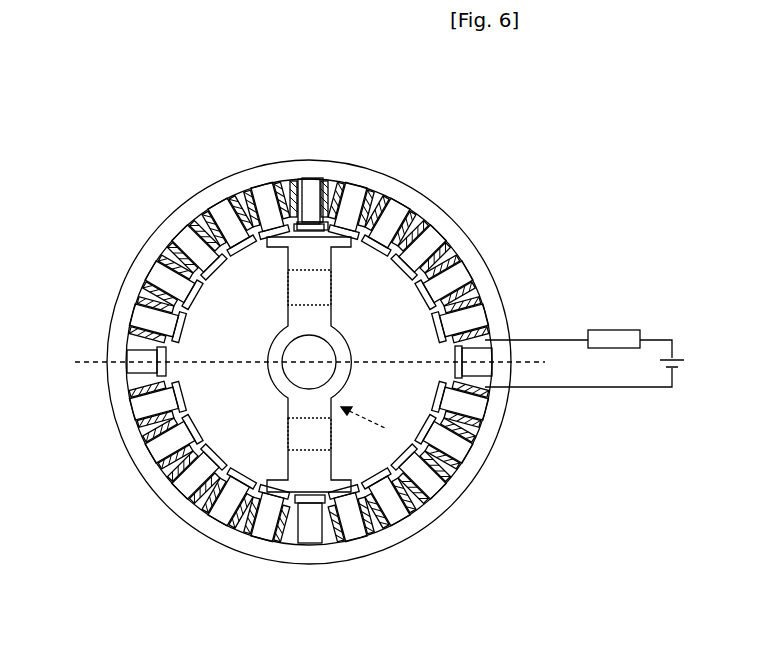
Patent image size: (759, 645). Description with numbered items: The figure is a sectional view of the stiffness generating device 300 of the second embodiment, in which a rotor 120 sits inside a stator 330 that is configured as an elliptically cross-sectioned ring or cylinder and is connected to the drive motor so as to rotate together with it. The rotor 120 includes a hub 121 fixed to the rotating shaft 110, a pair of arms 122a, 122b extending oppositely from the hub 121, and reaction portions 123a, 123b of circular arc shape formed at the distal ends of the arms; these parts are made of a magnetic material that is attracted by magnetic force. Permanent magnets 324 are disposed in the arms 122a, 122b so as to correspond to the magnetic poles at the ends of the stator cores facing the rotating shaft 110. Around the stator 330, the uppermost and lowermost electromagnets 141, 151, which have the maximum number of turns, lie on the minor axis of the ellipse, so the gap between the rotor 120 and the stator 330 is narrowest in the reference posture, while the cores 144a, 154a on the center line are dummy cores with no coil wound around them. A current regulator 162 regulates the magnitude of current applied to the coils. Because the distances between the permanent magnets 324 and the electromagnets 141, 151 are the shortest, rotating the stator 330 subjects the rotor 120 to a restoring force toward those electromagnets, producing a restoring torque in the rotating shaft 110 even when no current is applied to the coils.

The stiffness generating device 300 is at (98, 136).
The rotating shaft 110 is at (155, 508).
The rotor 120 is at (465, 508).
The hub 121 is at (130, 465).
The arm 122a is at (208, 214).
The arm 122b is at (222, 514).
The reaction portion 123a is at (262, 172).
The reaction portion 123b is at (350, 545).
The uppermost electromagnet 141 is at (319, 173).
The lowermost electromagnet 151 is at (292, 548).
The dummy core 144a is at (492, 340).
The dummy core 154a is at (117, 383).
The current regulator 162 is at (612, 328).
The permanent magnet 324 is at (433, 196).
The stator 330 is at (517, 245).